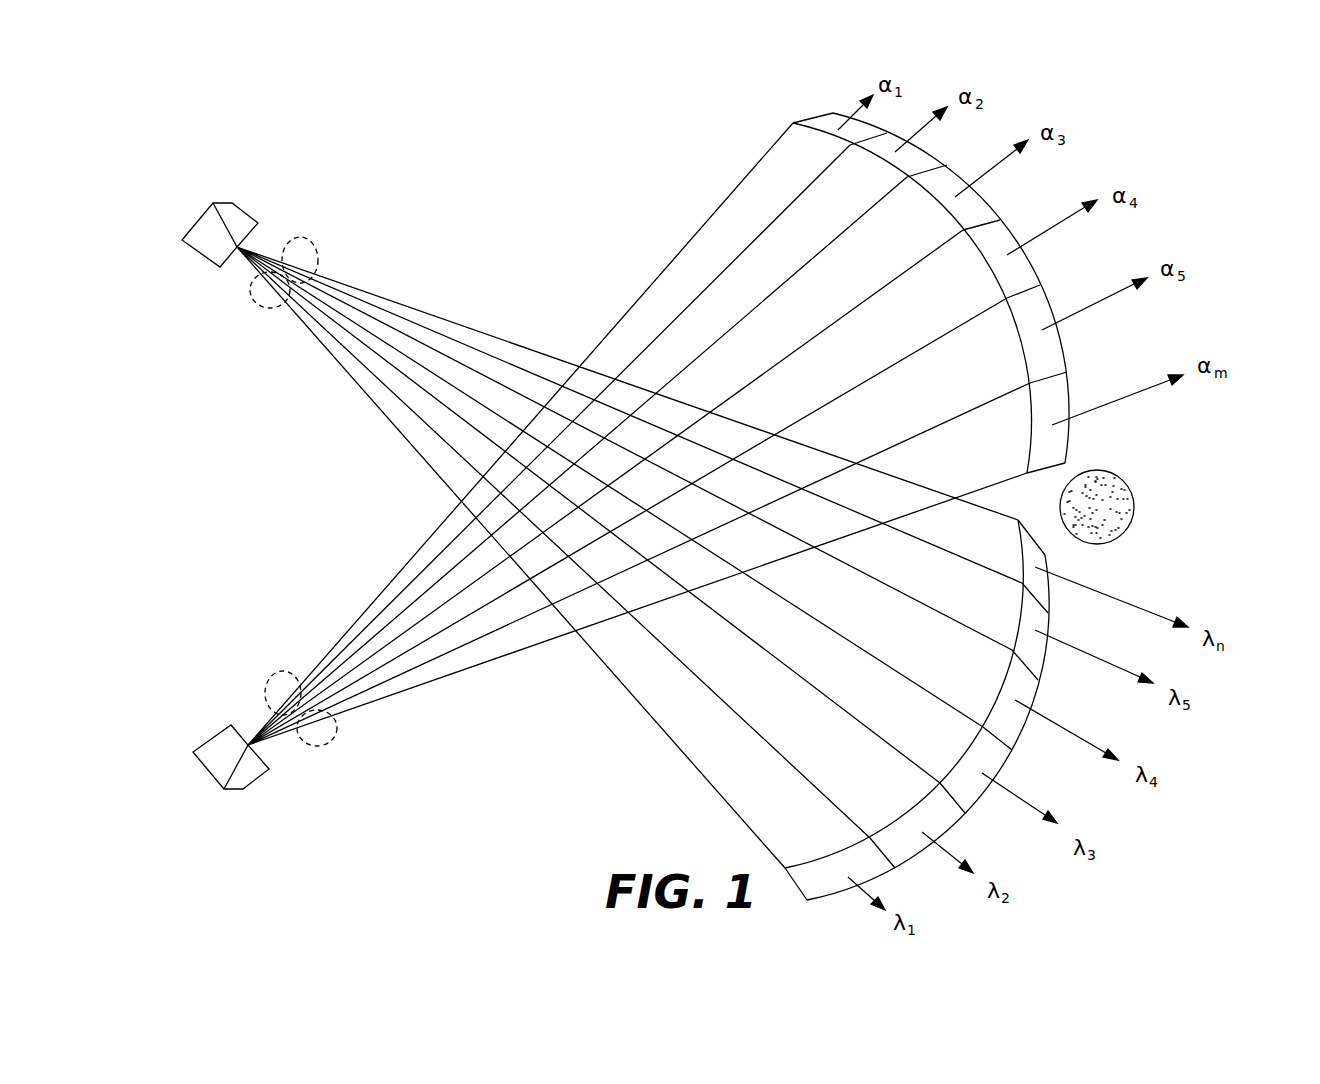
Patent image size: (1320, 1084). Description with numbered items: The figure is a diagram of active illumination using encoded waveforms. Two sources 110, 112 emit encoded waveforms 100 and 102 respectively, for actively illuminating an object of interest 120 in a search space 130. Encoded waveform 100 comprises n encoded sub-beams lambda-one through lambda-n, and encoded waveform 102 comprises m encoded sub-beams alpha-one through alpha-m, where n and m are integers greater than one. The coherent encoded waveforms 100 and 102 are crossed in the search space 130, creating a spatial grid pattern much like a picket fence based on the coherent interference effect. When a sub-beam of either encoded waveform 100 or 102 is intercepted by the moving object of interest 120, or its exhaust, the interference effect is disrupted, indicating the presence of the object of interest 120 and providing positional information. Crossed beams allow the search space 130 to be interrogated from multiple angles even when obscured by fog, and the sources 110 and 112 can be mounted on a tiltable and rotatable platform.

The encoded waveform 100 is at (317, 252).
The encoded waveform 102 is at (328, 740).
The source 110 is at (190, 235).
The source 112 is at (200, 775).
The object of interest 120 is at (1117, 533).
The search space 130 is at (823, 506).